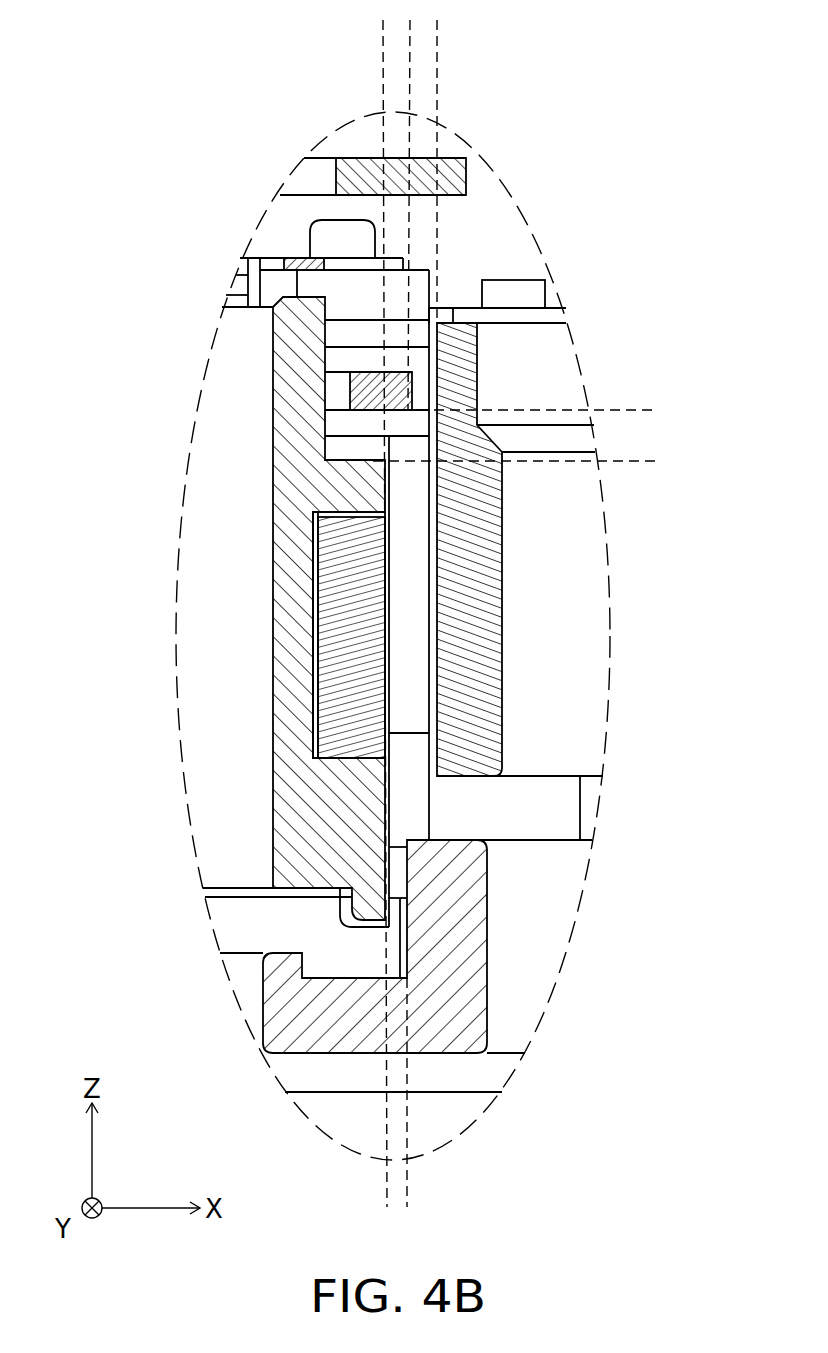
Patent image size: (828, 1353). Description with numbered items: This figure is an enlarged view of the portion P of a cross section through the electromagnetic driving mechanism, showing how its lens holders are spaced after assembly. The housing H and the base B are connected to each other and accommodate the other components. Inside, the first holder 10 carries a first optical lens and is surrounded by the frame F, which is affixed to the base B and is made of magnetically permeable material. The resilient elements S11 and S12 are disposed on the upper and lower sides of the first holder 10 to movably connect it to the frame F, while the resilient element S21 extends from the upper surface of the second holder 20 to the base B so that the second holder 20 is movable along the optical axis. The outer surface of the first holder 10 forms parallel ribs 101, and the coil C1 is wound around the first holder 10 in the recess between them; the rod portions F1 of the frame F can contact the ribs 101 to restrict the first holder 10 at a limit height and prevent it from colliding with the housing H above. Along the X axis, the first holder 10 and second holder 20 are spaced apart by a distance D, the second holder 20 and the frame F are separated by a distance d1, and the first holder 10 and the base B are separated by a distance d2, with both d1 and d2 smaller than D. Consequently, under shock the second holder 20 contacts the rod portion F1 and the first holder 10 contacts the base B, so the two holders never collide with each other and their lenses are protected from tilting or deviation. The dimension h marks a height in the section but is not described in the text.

The portion P is at (138, 51).
The housing H is at (360, 172).
The resilient element S11 is at (295, 258).
The resilient element S12 is at (232, 893).
The resilient element S21 is at (518, 316).
The rod portion F1 is at (365, 388).
The rib 101 is at (363, 483).
The first holder 10 is at (274, 560).
The coil C1 is at (350, 634).
The second holder 20 is at (503, 632).
The frame F is at (430, 808).
The base B is at (448, 945).
The height h is at (655, 410).
The distance D is at (437, 24).
The distance d1 is at (472, 67).
The distance d2 is at (448, 1203).